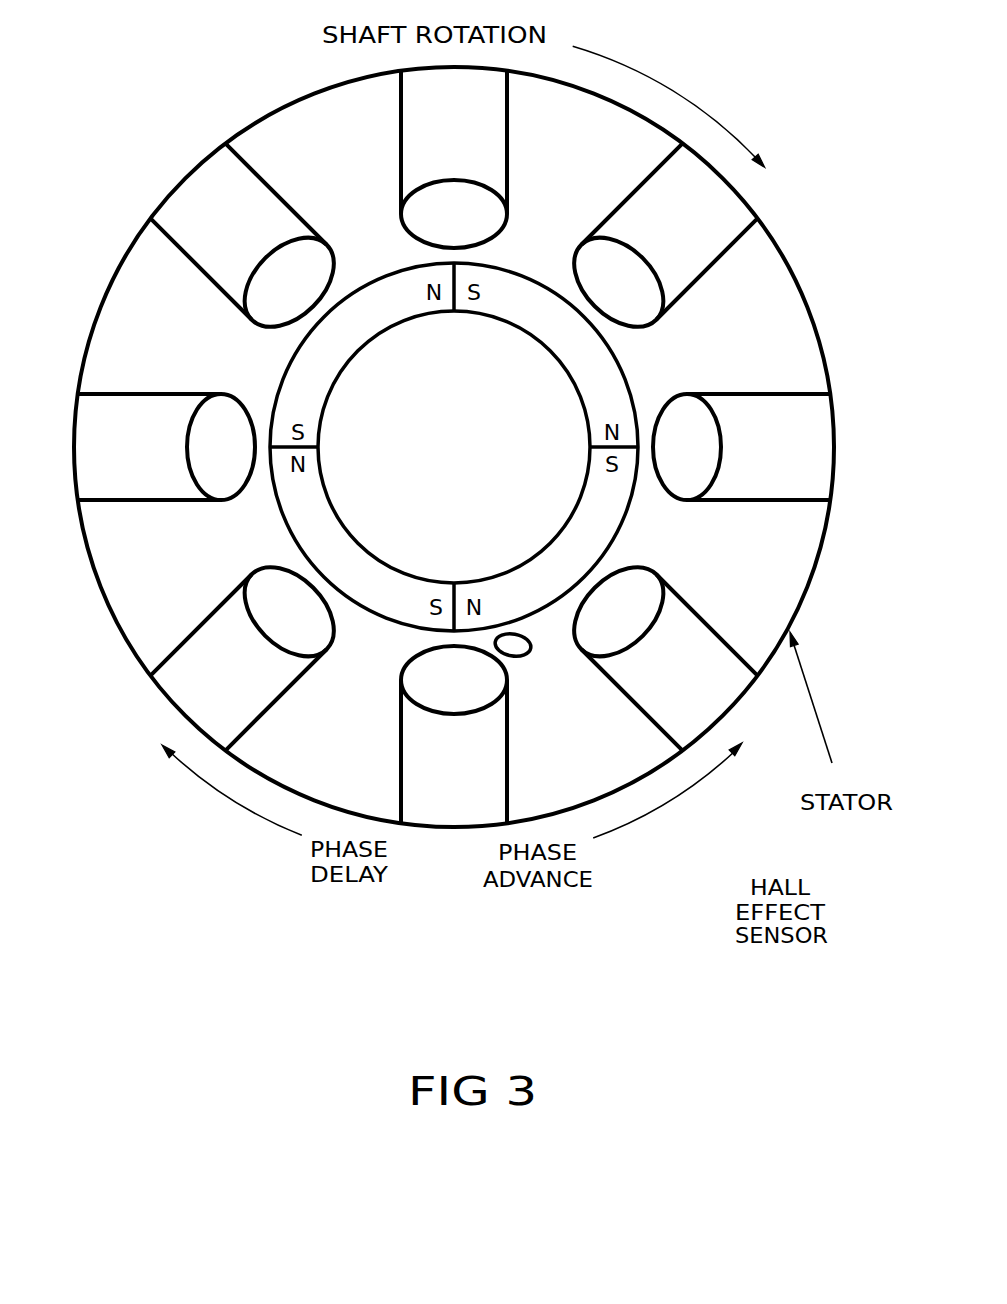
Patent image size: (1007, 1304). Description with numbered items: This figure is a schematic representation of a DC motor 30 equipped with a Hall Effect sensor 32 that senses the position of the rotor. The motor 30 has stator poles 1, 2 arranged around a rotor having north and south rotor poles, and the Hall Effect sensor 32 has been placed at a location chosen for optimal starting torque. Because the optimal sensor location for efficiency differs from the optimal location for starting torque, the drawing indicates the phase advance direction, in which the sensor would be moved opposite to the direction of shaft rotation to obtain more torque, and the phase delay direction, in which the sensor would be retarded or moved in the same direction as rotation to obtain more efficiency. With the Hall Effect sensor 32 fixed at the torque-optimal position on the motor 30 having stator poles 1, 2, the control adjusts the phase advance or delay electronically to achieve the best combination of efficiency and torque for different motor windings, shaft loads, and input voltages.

The motor 30 is at (205, 105).
The Hall Effect sensor 32 is at (528, 666).
The stator poles 1 is at (454, 447).
The stator poles 2 is at (453, 446).